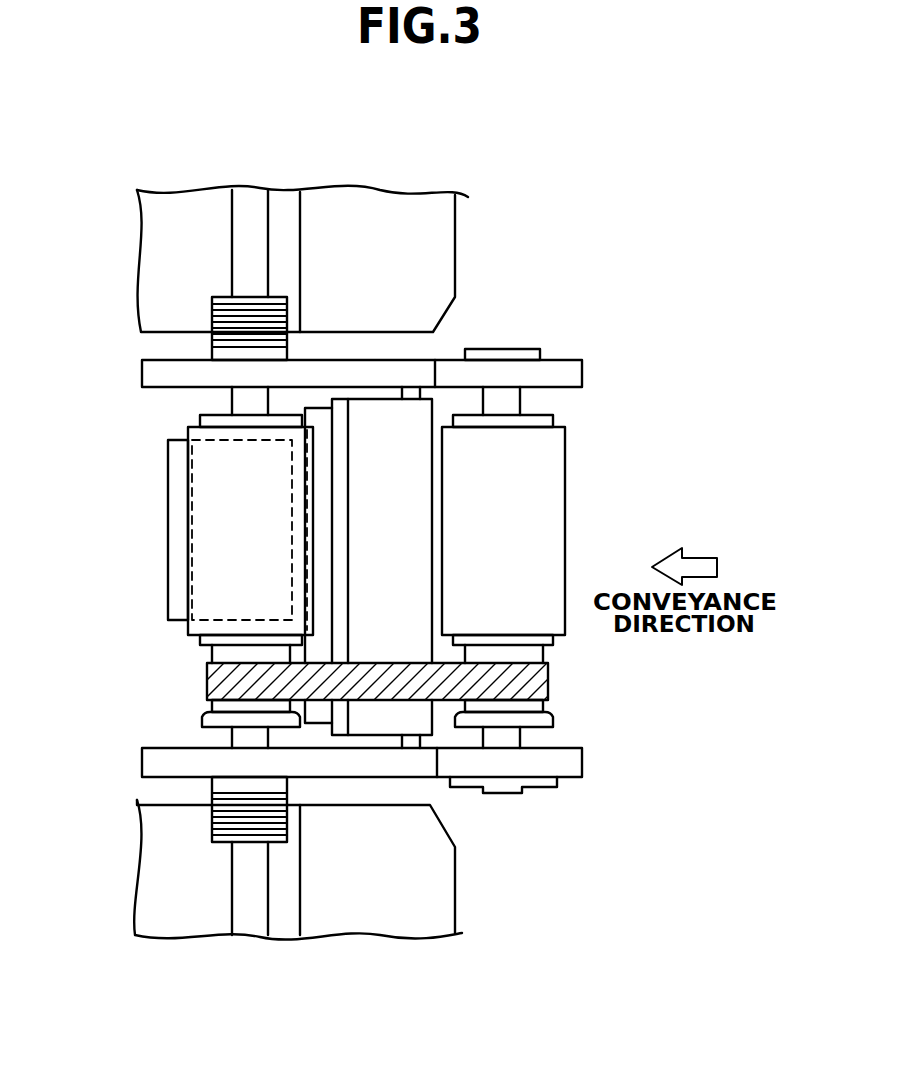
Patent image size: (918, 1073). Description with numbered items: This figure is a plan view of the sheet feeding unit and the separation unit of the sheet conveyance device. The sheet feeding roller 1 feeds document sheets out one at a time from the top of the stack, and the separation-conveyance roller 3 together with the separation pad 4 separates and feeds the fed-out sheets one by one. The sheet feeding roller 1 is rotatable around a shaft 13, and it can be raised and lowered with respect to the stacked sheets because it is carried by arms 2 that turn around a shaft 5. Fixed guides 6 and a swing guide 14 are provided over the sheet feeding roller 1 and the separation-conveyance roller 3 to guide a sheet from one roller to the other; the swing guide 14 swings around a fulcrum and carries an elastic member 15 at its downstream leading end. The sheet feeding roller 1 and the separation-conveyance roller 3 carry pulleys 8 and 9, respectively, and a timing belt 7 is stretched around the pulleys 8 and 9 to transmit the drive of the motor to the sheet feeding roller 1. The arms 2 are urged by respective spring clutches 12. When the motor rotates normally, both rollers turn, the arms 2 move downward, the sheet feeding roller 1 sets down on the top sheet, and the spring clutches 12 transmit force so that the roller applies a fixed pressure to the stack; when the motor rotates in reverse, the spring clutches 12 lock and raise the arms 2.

The sheet feeding roller 1 is at (548, 505).
The arms 2 is at (507, 358).
The separation-conveyance roller 3 is at (183, 427).
The separation pad 4 is at (170, 535).
The shaft 5 is at (238, 893).
The fixed guides 6 is at (443, 237).
The timing belt 7 is at (540, 680).
The pulley 8 is at (548, 718).
The pulley 9 is at (205, 715).
The spring clutches 12 is at (212, 313).
The shaft 13 is at (520, 400).
The swing guide 14 is at (368, 418).
The elastic member 15 is at (322, 715).